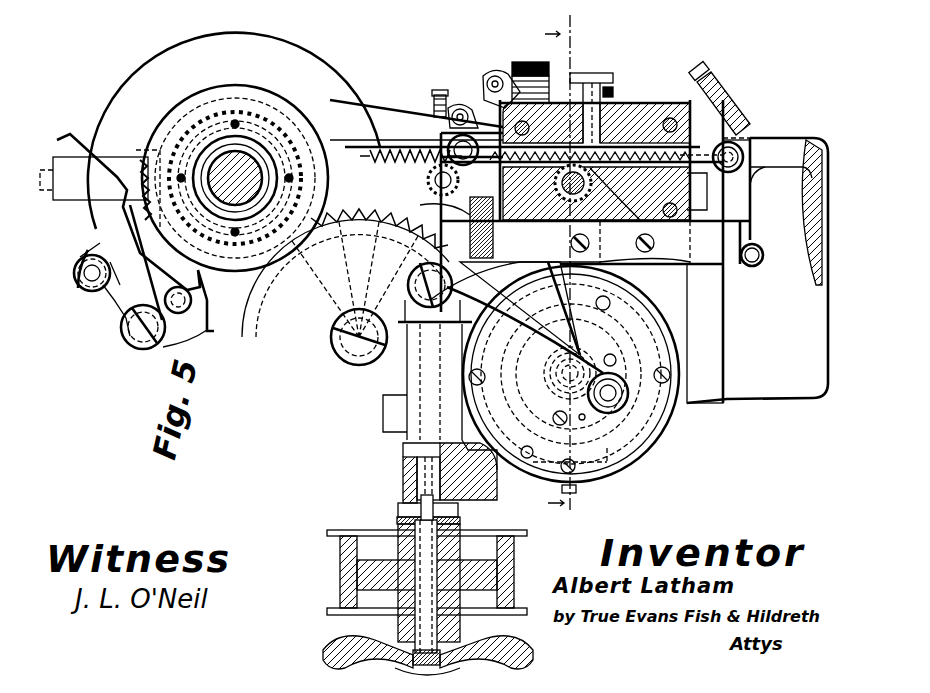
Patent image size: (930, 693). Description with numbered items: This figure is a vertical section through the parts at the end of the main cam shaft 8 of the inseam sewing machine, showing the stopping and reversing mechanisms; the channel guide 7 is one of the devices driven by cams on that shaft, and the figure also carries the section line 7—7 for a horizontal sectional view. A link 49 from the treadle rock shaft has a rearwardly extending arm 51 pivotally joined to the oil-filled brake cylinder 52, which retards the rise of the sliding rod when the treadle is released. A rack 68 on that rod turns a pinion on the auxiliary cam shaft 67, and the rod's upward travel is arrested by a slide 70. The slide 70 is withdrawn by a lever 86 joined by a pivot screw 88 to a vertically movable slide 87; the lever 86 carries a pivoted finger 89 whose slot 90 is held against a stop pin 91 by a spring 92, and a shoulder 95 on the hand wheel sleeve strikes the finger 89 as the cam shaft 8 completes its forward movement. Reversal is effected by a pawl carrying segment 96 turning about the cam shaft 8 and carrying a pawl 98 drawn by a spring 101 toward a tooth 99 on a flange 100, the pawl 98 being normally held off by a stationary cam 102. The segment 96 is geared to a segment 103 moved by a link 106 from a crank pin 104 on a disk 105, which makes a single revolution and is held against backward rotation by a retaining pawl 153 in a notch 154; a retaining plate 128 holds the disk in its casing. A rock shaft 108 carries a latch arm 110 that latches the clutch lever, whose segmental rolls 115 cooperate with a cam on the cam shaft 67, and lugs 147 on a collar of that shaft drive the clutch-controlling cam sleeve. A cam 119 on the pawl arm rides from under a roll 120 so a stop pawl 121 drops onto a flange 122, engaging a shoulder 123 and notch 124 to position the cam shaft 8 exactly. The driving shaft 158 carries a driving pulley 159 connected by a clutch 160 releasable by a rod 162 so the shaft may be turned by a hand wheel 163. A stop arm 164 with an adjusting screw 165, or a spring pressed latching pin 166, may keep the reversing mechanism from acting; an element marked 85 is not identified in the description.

The section line 7— 7 is at (564, 270).
The cam shaft 8 is at (231, 181).
The link 49 is at (785, 150).
The rearwardly extending arm 51 is at (758, 182).
The brake cylinder 52 is at (732, 266).
The cam shaft 67 is at (622, 110).
The rack 68 is at (654, 245).
The slide 70 is at (490, 120).
The lever 85 is at (560, 303).
The lever 86 is at (403, 170).
The vertically movable slide 87 is at (532, 308).
The pivot screw 88 is at (397, 235).
The pivoted finger 89 is at (345, 273).
The slot 90 is at (385, 310).
The stop pin 91 is at (398, 205).
The spring 92 is at (384, 147).
The shoulder 95 is at (330, 325).
The pawl carrying segment 96 is at (168, 136).
The pawl 98 is at (55, 183).
The tooth 99 is at (248, 100).
The flange 100 is at (190, 120).
The spring 101 is at (165, 172).
The stationary cam 102 is at (212, 333).
The segment 103 is at (330, 305).
The crank pin 104 is at (652, 438).
The disk 105 is at (618, 402).
The link 106 is at (556, 372).
The rock shaft 108 is at (755, 251).
The latch arm 110 is at (418, 268).
The segmental rolls 115 is at (433, 237).
The cam 119 is at (100, 205).
The roll 120 is at (90, 291).
The stop pawl 121 is at (60, 138).
The flange 122 is at (224, 92).
The shoulder 123 is at (72, 200).
The notch 124 is at (140, 128).
The retaining plate 128 is at (597, 470).
The lugs 147 is at (442, 472).
The retaining pawl 153 is at (476, 466).
The notch 154 is at (506, 506).
The driving shaft 158 is at (403, 483).
The driving pulley 159 is at (340, 573).
The clutch 160 is at (398, 520).
The rod 162 is at (493, 672).
The hand wheel 163 is at (327, 650).
The stop arm 164 is at (735, 108).
The adjusting screw 165 is at (700, 72).
The latching pin 166 is at (593, 84).